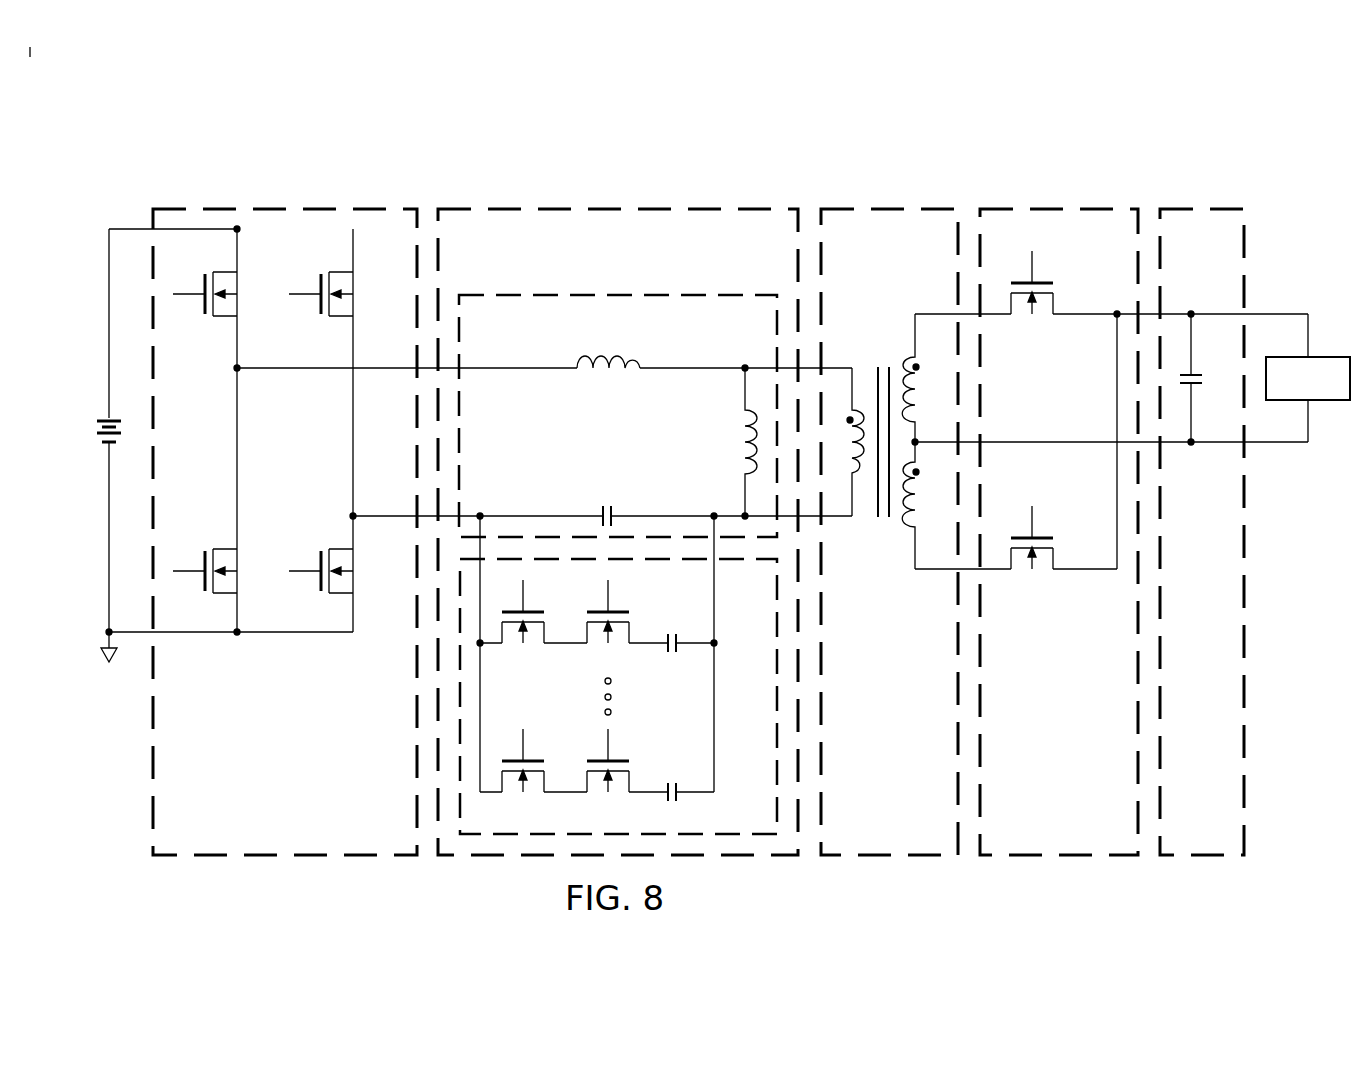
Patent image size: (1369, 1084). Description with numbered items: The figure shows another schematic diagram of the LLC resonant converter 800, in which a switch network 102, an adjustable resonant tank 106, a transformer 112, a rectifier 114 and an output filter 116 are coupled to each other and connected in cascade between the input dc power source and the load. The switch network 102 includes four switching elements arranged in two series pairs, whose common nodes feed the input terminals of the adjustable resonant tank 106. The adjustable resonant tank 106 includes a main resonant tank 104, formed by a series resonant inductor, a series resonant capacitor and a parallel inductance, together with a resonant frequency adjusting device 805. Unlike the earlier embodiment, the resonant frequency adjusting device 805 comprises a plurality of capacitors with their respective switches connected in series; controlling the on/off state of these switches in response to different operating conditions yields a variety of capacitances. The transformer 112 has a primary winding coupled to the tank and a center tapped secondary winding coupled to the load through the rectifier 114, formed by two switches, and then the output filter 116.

The LLC resonant converter 800 is at (372, 143).
The switch network 102 is at (208, 206).
The main resonant tank 104 is at (724, 340).
The adjustable resonant tank 106 is at (490, 206).
The resonant frequency adjusting device 805 is at (766, 712).
The transformer 112 is at (942, 206).
The rectifier 114 is at (1085, 206).
The output filter 116 is at (1229, 206).